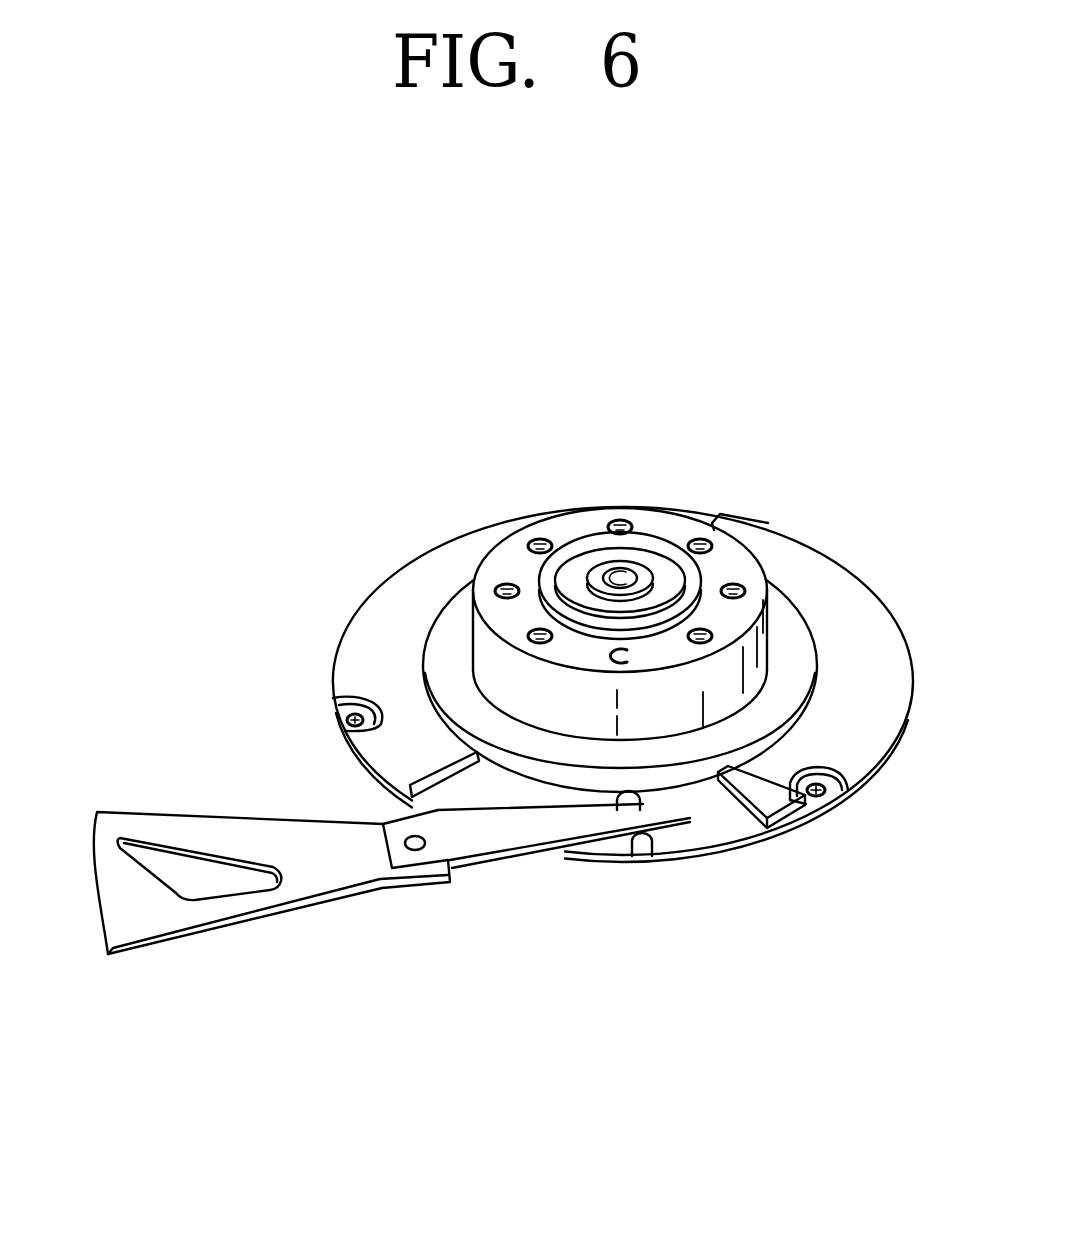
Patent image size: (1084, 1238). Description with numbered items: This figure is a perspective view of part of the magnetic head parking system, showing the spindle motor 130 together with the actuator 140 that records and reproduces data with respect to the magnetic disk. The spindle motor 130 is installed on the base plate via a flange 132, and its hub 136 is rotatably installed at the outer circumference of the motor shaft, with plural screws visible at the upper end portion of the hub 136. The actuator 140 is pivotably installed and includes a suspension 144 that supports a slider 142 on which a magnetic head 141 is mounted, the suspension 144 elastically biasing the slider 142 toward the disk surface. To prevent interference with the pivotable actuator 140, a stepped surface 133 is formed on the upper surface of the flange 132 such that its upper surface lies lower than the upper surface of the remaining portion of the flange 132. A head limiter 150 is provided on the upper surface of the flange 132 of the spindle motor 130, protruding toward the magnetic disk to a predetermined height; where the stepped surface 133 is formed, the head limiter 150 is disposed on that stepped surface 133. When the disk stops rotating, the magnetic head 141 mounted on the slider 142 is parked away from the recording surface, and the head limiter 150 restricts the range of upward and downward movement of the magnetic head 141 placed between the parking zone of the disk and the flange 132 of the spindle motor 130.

The spindle motor 130 is at (392, 527).
The flange 132 is at (357, 637).
The stepped surface 133 is at (450, 795).
The hub 136 is at (739, 563).
The actuator 140 is at (324, 958).
The magnetic head 141 is at (720, 842).
The slider 142 is at (660, 822).
The suspension 144 is at (537, 860).
The head limiter 150 is at (640, 855).